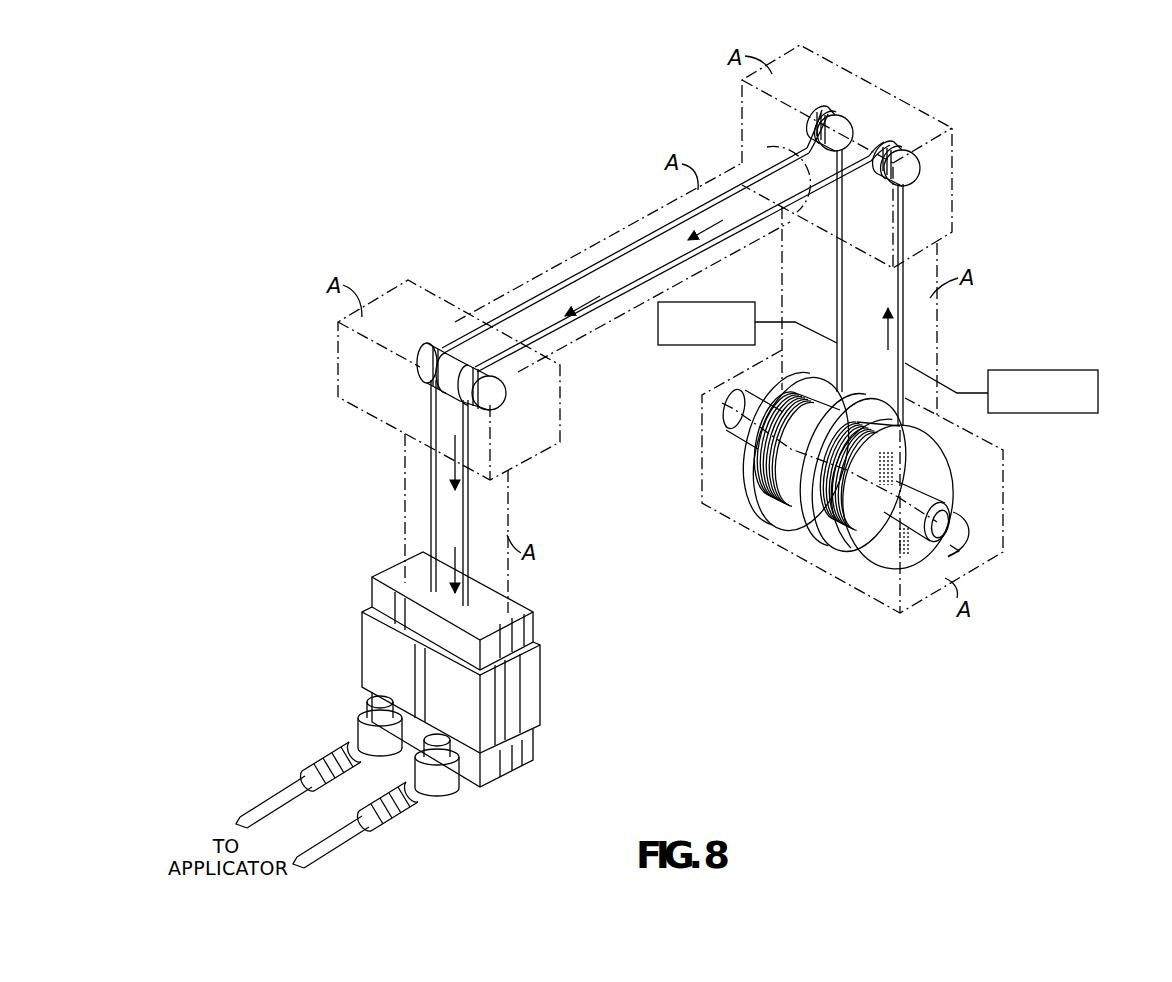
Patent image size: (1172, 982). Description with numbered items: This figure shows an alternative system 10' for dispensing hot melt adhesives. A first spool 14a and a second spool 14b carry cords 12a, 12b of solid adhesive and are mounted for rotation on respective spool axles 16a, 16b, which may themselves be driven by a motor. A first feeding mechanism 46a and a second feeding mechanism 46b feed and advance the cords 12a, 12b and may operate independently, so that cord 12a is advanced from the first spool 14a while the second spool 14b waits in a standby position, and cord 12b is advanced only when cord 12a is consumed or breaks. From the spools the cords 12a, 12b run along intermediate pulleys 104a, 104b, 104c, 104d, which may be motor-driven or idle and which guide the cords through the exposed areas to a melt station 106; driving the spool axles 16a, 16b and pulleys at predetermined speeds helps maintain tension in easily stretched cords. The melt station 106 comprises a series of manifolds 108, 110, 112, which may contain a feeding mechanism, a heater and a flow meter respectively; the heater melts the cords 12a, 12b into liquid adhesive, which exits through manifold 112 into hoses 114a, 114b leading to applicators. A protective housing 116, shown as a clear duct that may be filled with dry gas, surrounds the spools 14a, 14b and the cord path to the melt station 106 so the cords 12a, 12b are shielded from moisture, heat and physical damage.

The system 10' is at (422, 158).
The intermediate pulley 104a is at (890, 150).
The intermediate pulley 104b is at (820, 116).
The intermediate pulley 104c is at (492, 400).
The intermediate pulley 104d is at (427, 354).
The protective housing 116 is at (627, 242).
The cord 12a is at (906, 322).
The cord 12b is at (834, 300).
The first feeding mechanism 46a is at (1090, 370).
The second feeding mechanism 46b is at (672, 346).
The spool axle 16a is at (985, 492).
The spool axle 16b is at (724, 427).
The first spool 14a is at (820, 527).
The second spool 14b is at (760, 490).
The melt station 106 is at (344, 577).
The manifold 108 is at (530, 624).
The manifold 110 is at (535, 683).
The manifold 112 is at (535, 748).
The hose 114a is at (333, 837).
The hose 114b is at (287, 790).